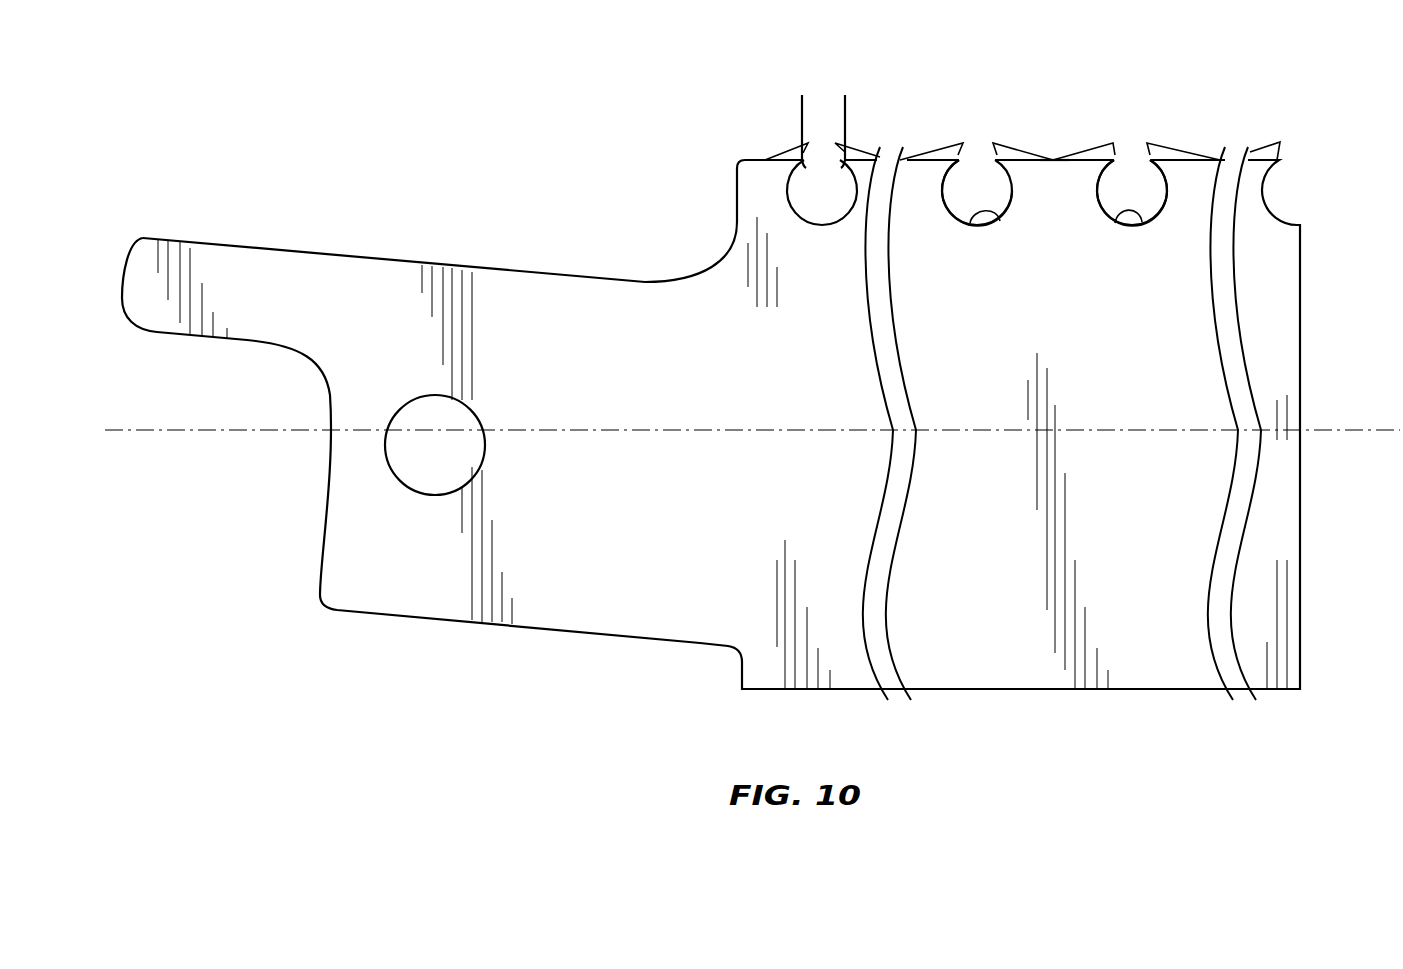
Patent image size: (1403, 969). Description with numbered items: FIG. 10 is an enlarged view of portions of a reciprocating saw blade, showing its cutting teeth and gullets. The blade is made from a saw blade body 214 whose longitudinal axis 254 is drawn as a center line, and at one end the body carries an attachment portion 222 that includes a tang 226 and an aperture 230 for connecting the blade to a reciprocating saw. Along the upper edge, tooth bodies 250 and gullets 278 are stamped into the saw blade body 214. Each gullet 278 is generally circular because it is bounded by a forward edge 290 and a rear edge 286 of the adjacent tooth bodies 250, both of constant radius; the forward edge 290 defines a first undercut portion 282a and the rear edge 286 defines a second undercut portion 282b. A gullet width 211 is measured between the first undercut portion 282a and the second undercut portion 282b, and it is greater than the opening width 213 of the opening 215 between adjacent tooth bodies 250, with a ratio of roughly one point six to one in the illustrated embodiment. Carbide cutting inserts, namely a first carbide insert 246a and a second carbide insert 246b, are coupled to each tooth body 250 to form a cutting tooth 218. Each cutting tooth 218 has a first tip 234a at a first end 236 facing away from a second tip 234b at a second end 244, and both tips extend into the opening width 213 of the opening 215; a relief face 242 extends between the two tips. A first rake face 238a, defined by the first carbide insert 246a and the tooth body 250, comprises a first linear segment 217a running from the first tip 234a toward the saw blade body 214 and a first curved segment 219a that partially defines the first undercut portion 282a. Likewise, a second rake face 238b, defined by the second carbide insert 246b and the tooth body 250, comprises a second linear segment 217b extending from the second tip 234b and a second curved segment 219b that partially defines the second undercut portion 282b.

The attachment portion 222 is at (490, 148).
The saw blade body 214 is at (1140, 628).
The tang 226 is at (215, 292).
The aperture 230 is at (440, 490).
The longitudinal axis 254 is at (1325, 424).
The opening 215 is at (820, 176).
The opening width 213 is at (888, 108).
The gullet width 211 is at (858, 263).
The gullet 278 is at (825, 223).
The first carbide cutting insert 246a is at (1158, 150).
The second carbide cutting insert 246b is at (787, 148).
The first linear segment 217a is at (1003, 163).
The second linear segment 217b is at (1105, 163).
The first curved segment 219a is at (998, 183).
The second curved segment 219b is at (1100, 183).
The first tip 234a is at (993, 147).
The second tip 234b is at (1118, 147).
The cutting tooth 218 is at (1026, 95).
The relief face 242 is at (1057, 139).
The tooth body 250 is at (1037, 198).
The first rake face 238a is at (963, 197).
The second rake face 238b is at (1147, 197).
The first undercut portion 282a is at (970, 222).
The second undercut portion 282b is at (1139, 227).
The first end 236 is at (991, 240).
The forward edge 290 is at (1013, 207).
The rear edge 286 is at (1098, 205).
The second end 244 is at (1108, 238).